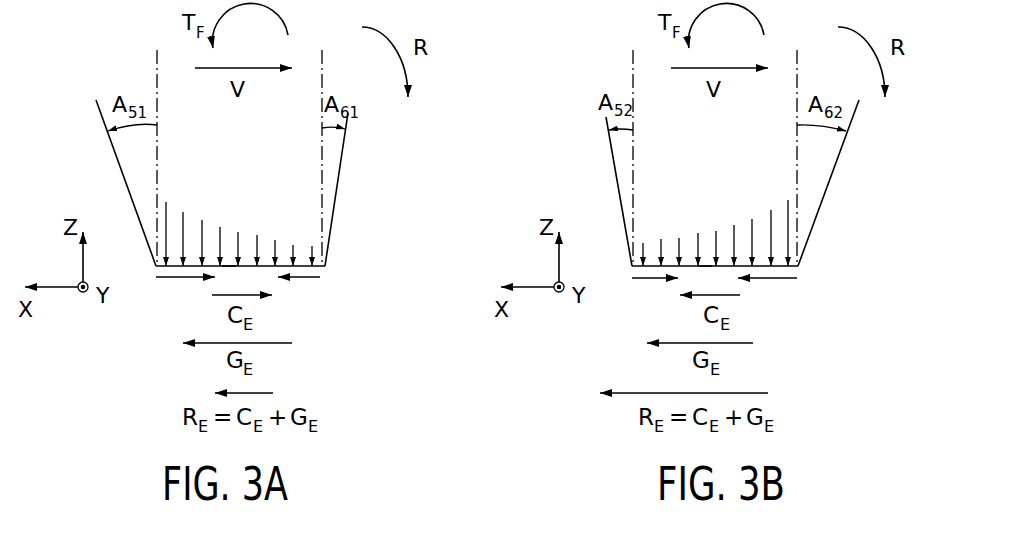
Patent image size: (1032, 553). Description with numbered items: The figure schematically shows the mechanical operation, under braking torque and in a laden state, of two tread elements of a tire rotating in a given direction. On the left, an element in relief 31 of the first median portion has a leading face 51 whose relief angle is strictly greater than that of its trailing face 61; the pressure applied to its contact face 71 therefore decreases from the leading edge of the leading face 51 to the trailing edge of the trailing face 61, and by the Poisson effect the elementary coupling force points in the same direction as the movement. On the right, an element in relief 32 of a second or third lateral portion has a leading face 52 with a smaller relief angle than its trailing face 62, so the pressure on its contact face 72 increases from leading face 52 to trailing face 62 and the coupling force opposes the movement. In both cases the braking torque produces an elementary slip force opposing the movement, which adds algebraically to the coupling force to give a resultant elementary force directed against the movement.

In FIG. 3A, the element in relief of the first median portion 31 is at (259, 228).
In FIG. 3B, the element in relief of a second or third lateral portion 32 is at (743, 213).
In FIG. 3A, the leading face 51 is at (122, 172).
In FIG. 3B, the leading face 52 is at (616, 177).
In FIG. 3A, the trailing face 61 is at (341, 163).
In FIG. 3B, the trailing face 62 is at (839, 155).
In FIG. 3A, the contact face 71 is at (228, 258).
In FIG. 3B, the contact face 72 is at (705, 257).